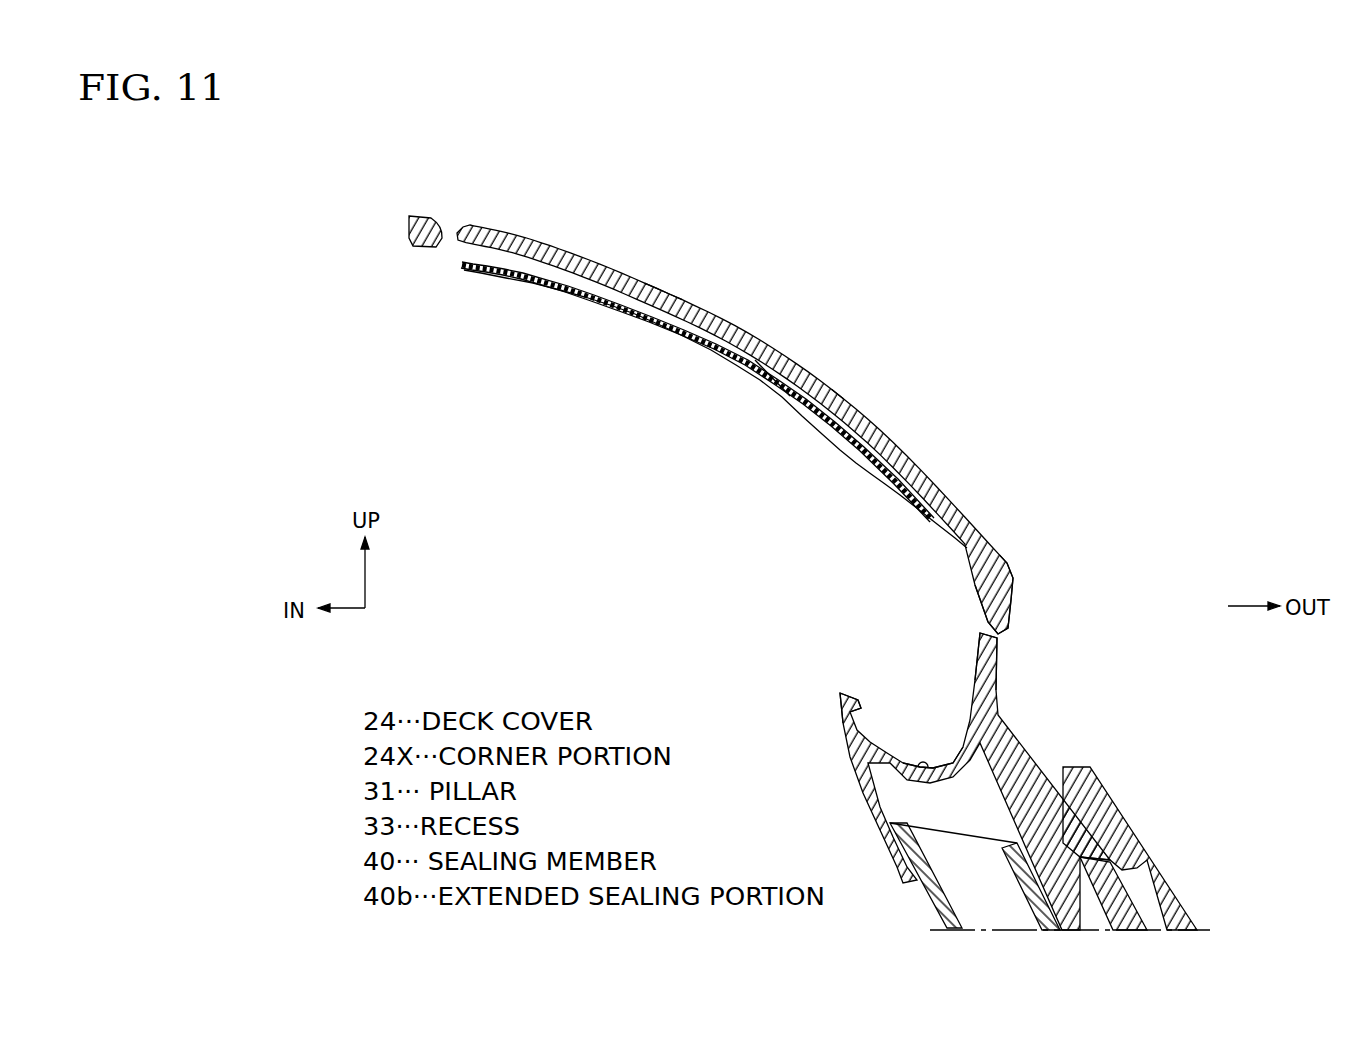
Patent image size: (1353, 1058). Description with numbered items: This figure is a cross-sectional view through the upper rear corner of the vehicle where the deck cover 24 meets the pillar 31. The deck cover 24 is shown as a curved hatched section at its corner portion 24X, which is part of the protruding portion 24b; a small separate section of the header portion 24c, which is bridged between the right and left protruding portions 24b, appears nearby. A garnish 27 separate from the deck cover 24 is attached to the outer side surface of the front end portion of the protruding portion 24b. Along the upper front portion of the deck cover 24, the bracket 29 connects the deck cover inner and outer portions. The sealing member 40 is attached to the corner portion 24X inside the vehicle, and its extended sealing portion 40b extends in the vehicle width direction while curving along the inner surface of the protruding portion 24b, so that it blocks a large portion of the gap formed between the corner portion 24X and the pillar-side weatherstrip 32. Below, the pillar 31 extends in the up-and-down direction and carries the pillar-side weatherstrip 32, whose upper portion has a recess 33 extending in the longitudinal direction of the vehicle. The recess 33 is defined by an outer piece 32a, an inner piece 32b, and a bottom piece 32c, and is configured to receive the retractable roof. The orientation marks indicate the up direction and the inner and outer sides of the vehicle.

The deck cover 24 is at (538, 238).
The protruding portion 24b is at (663, 289).
The header portion 24c is at (432, 216).
The corner portion 24X is at (1010, 568).
The garnish 27 is at (1143, 828).
The bracket 29 is at (838, 394).
The pillar 31 is at (933, 907).
The pillar-side weatherstrip 32 is at (1033, 754).
The outer piece 32a is at (999, 668).
The inner piece 32b is at (840, 718).
The bottom piece 32c is at (935, 778).
The recess 33 is at (921, 737).
The sealing member 40 is at (865, 450).
The extended sealing portion 40b is at (1012, 615).